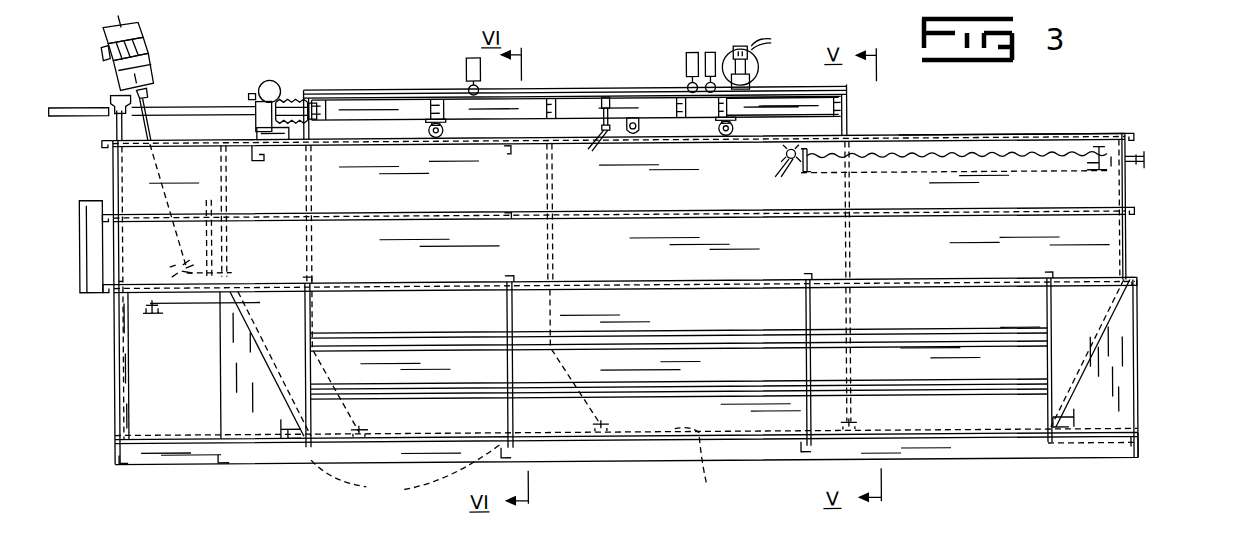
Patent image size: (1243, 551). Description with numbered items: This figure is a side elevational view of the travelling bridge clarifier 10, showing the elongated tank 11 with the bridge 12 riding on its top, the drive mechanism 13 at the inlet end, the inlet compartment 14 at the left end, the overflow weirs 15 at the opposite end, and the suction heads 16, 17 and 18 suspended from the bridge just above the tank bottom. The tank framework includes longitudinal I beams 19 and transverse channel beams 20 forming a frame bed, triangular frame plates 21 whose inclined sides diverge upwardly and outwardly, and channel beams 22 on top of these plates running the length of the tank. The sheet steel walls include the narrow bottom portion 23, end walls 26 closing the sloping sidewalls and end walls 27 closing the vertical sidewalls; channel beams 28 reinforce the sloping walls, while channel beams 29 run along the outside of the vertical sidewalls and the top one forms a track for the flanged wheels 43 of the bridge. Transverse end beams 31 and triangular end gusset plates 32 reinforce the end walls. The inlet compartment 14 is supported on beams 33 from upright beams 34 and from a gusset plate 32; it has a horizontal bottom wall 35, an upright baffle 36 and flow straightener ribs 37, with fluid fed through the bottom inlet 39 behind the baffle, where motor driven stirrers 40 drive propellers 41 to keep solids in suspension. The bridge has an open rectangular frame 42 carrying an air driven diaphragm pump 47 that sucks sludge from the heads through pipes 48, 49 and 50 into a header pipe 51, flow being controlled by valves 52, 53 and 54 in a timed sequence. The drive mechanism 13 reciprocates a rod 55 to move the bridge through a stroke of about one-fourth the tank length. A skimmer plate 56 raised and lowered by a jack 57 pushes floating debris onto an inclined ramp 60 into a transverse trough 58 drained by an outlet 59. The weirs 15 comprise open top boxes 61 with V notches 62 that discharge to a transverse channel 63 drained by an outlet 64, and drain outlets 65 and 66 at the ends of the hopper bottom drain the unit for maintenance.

The travelling bridge clarifier 10 is at (1063, 136).
The elongated tank 11 is at (1107, 250).
The bridge 12 is at (372, 113).
The drive mechanism 13 is at (278, 78).
The inlet compartment 14 is at (150, 168).
The overflow weirs 15 is at (1085, 164).
The suction head 16 is at (367, 433).
The suction head 17 is at (613, 427).
The suction head 18 is at (857, 427).
The longitudinally extending I beam 19 is at (173, 450).
The transverse channel beam 20 is at (406, 475).
The triangular shaped frame plate 21 is at (507, 293).
The channel beam 22 is at (1127, 274).
The bottom portion 23 is at (697, 469).
The end wall 26 is at (280, 392).
The end wall 27 is at (113, 191).
The channel beam 28 is at (662, 383).
The channel beam 29 is at (1000, 136).
The transverse end beam 31 is at (103, 141).
The triangular end gusset plate 32 is at (238, 377).
The beam 33 is at (198, 298).
The upright beam 34 is at (132, 403).
The horizontal bottom wall 35 is at (123, 282).
The upright baffle 36 is at (200, 180).
The flow straightener rib 37 is at (230, 197).
The bottom inlet 39 is at (160, 310).
The electric motor driven stirrer 40 is at (157, 62).
The propeller 41 is at (223, 271).
The open rectangular frame 42 is at (773, 100).
The flanged wheel 43 is at (443, 140).
The air driven diaphragm type pump 47 is at (767, 45).
The pipe 48 is at (313, 245).
The pipe 49 is at (555, 245).
The pipe 50 is at (852, 248).
The header pipe 51 is at (628, 86).
The valve 52 is at (469, 87).
The valve 53 is at (690, 83).
The valve 54 is at (739, 50).
The rod 55 is at (300, 100).
The skimmer plate 56 is at (627, 135).
The jack 57 is at (600, 112).
The transverse trough 58 is at (803, 173).
The outlet 59 is at (788, 165).
The inclined ramp 60 is at (783, 156).
The open top box 61 is at (1007, 163).
The V notch 62 is at (973, 154).
The transverse channel 63 is at (1113, 165).
The outlet 64 is at (1147, 167).
The drain outlet 65 is at (293, 435).
The drain outlet 66 is at (1063, 430).